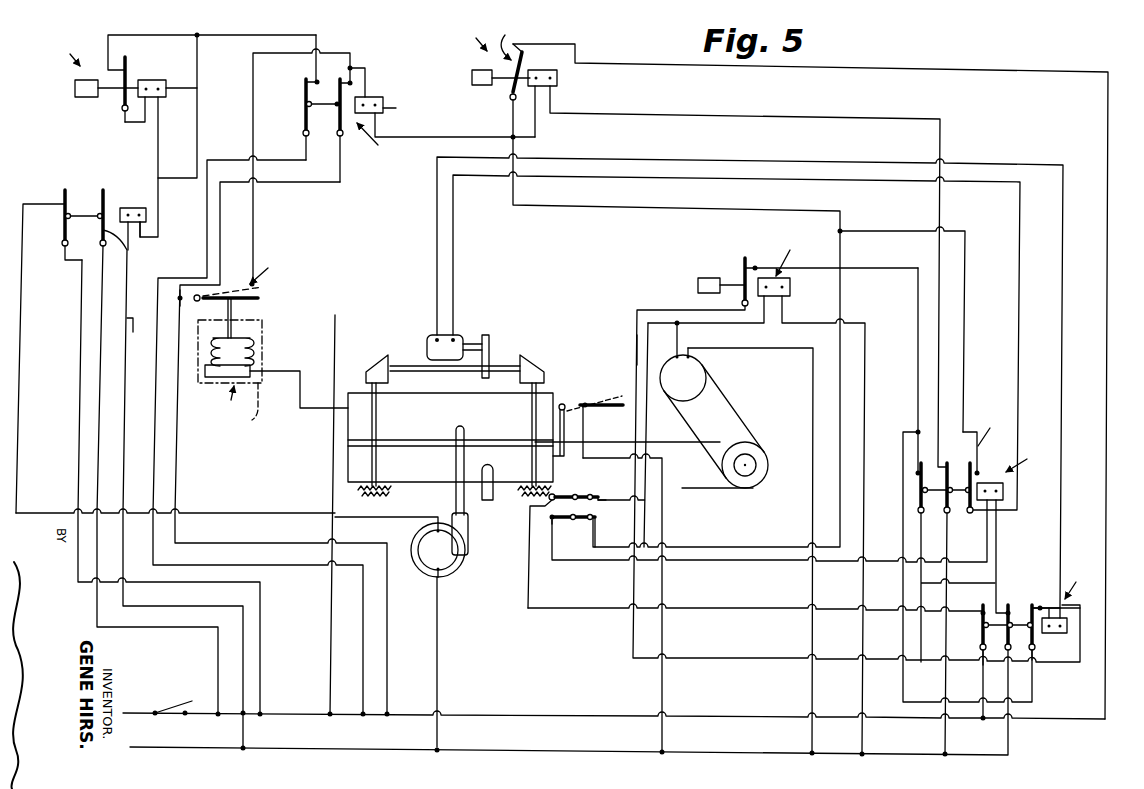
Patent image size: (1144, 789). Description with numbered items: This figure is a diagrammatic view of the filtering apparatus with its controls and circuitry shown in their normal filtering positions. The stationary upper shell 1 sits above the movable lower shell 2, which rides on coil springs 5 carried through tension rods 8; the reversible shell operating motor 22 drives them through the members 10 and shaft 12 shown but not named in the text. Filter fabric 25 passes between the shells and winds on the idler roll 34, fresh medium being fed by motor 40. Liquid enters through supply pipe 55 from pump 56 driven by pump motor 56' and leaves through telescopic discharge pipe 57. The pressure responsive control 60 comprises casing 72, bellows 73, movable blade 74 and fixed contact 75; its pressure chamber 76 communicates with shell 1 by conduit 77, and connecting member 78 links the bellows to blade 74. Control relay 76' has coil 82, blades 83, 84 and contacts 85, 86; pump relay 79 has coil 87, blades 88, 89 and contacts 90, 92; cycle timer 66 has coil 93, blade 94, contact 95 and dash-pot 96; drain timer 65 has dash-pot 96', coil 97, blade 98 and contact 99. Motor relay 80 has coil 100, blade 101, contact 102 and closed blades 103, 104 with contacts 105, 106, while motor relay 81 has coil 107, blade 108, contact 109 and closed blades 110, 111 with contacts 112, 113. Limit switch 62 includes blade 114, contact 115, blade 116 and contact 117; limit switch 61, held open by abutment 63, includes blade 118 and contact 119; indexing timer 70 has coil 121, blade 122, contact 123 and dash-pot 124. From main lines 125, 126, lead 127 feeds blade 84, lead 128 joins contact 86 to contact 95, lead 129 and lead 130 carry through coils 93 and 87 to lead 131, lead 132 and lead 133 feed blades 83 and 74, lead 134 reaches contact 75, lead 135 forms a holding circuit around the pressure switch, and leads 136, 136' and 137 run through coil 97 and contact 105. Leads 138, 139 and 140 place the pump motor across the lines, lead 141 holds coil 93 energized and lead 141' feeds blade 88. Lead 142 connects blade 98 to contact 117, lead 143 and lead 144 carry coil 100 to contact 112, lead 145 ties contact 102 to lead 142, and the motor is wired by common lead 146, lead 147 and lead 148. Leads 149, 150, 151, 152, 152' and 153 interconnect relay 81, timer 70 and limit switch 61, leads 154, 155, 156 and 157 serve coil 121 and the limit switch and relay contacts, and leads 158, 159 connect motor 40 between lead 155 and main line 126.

The upper shell 1 is at (463, 400).
The lower shell 2 is at (418, 480).
The coil springs 5 is at (368, 492).
The tension rods 8 is at (378, 427).
The drive cone 10 is at (365, 378).
The shaft 12 is at (387, 355).
The shell operating motor 22 is at (440, 360).
The filter fabric 25 is at (727, 436).
The horizontal shaft 34 is at (768, 469).
The motor 40 is at (705, 371).
The supply pipe 55 is at (456, 498).
The pump 56 is at (453, 550).
The pump motor 56' is at (386, 531).
The telescopic discharge pipe 57 is at (488, 494).
The pressure responsive control 60 is at (224, 403).
The limit switch 61 is at (586, 399).
The limit switch 62 is at (542, 523).
The switch actuating bracket 63 is at (558, 428).
The drain timer 65 is at (470, 37).
The cycle timer 66 is at (65, 50).
The delayed action relay 70 is at (790, 254).
The casing 72 is at (258, 409).
The bellows 73 is at (262, 343).
The movable switch blade 74 is at (262, 293).
The fixed contact 75 is at (269, 267).
The pressure chamber 76 is at (219, 387).
The control relay 76' is at (370, 144).
The conduit 77 is at (318, 410).
The connecting member 78 is at (234, 318).
The pump controlling relay 79 is at (60, 188).
The motor relay 80 is at (1026, 460).
The motor relay 81 is at (1078, 582).
The coil 82 is at (396, 108).
The switch blade 83 is at (338, 120).
The switch blade 84 is at (304, 118).
The fixed contact 85 is at (366, 73).
The fixed contact 86 is at (303, 91).
The coil 87 is at (131, 208).
The switch blade 88 is at (128, 253).
The switch blade 89 is at (58, 240).
The fixed contact 90 is at (114, 190).
The fixed contact 92 is at (62, 204).
The coil 93 is at (197, 90).
The switch blade 94 is at (140, 80).
The fixed contact 95 is at (124, 70).
The time delay means 96 is at (85, 89).
The dash-pot 96' is at (494, 92).
The coil 97 is at (558, 78).
The switch blade 98 is at (526, 62).
The fixed contact 99 is at (516, 42).
The coil 100 is at (1004, 491).
The switch blade 101 is at (994, 429).
The fixed contact 102 is at (978, 465).
The switch blade 103 is at (950, 509).
The switch blade 104 is at (919, 499).
The fixed contact 105 is at (945, 466).
The fixed contact 106 is at (916, 474).
The coil 107 is at (1067, 629).
The switch blade 108 is at (1036, 641).
The fixed contact 109 is at (1040, 606).
The switch blade 110 is at (1031, 651).
The switch blade 111 is at (985, 651).
The fixed contact 112 is at (997, 611).
The fixed contact 113 is at (980, 608).
The switch blade 114 is at (599, 503).
The fixed contact 115 is at (592, 492).
The switch blade 116 is at (596, 521).
The contact 117 is at (580, 523).
The switch blade 118 is at (594, 412).
The contact 119 is at (616, 400).
The coil 121 is at (790, 296).
The switch blade 122 is at (744, 266).
The contact 123 is at (755, 265).
The dash-pot 124 is at (706, 279).
The main line 125 is at (850, 70).
The main line 126 is at (492, 753).
The lead 127 is at (286, 162).
The lead 128 is at (218, 36).
The lead 129 is at (120, 122).
The lead 130 is at (159, 146).
The lead 131 is at (267, 736).
The lead 132 is at (333, 184).
The lead 133 is at (188, 296).
The lead 134 is at (335, 52).
The lead 135 is at (383, 100).
The lead 136 is at (455, 137).
The lead 136' is at (748, 276).
The lead 137 is at (945, 641).
The lead 138 is at (440, 643).
The lead 139 is at (236, 514).
The lead 140 is at (79, 438).
The lead 141 is at (195, 106).
The lead 141' is at (131, 479).
The lead 142 is at (553, 205).
The lead 143 is at (606, 562).
The lead 144 is at (998, 555).
The lead 145 is at (966, 310).
The common lead 146 is at (328, 611).
The lead 147 is at (456, 268).
The lead 148 is at (437, 289).
The lead 149 is at (920, 541).
The lead 150 is at (915, 361).
The lead 151 is at (633, 311).
The lead 152 is at (639, 435).
The lead 152' is at (648, 603).
The lead 153 is at (1034, 690).
The lead 154 is at (866, 335).
The lead 155 is at (636, 349).
The lead 156 is at (529, 581).
The lead 157 is at (980, 721).
The lead 158 is at (682, 340).
The lead 159 is at (812, 405).